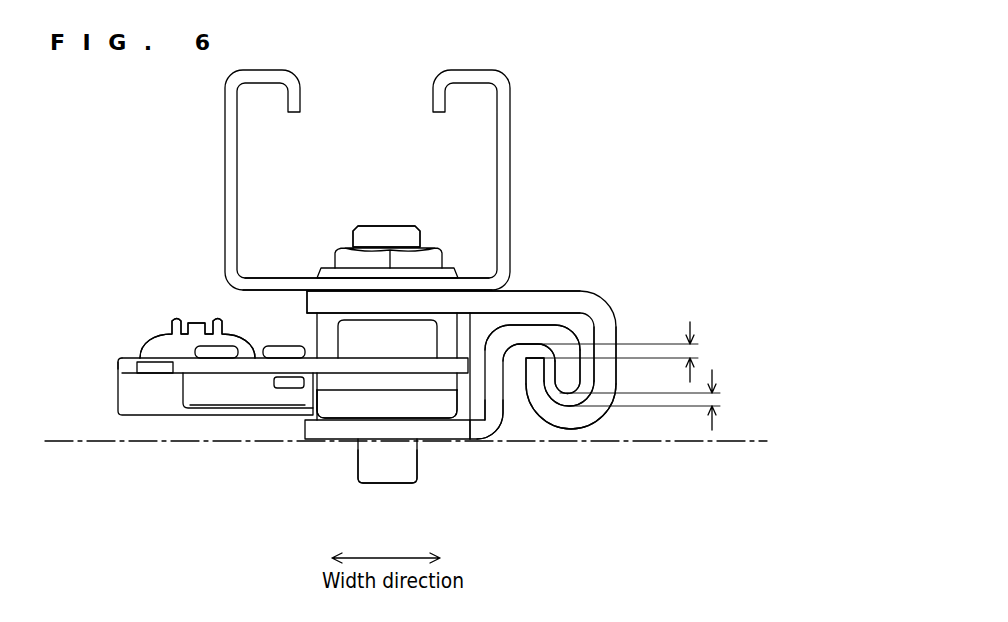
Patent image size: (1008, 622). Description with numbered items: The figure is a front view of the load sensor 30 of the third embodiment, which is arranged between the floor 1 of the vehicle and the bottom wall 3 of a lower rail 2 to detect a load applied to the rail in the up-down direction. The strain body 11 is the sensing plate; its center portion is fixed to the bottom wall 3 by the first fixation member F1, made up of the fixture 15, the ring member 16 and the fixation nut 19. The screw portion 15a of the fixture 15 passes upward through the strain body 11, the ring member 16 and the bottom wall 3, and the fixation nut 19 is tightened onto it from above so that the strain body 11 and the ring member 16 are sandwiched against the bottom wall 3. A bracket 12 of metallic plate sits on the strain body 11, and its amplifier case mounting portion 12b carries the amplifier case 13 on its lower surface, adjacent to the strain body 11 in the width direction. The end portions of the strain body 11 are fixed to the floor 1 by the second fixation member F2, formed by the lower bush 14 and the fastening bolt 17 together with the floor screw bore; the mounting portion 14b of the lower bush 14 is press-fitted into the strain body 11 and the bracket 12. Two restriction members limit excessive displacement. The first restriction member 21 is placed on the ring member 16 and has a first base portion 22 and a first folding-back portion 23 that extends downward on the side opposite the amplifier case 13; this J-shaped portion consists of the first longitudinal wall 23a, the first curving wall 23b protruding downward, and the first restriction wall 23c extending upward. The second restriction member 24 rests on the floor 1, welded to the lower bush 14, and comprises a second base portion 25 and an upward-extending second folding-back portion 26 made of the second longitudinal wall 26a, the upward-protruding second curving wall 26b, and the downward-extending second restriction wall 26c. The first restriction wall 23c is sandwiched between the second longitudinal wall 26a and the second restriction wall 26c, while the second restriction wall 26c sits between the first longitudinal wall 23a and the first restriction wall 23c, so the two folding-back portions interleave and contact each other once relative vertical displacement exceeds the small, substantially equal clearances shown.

The floor 1 is at (745, 440).
The lower rail 2 is at (523, 232).
The bottom wall 3 is at (262, 282).
The strain body 11 is at (320, 382).
The bracket 12 is at (278, 372).
The amplifier case mounting portion 12b is at (225, 368).
The amplifier case 13 is at (141, 406).
The lower bush 14 is at (387, 404).
The mounting portion 14b is at (325, 415).
The fixture 15 is at (386, 236).
The screw portion 15a is at (373, 232).
The ring member 16 is at (316, 333).
The fastening bolt 17 is at (403, 467).
The fixation nut 19 is at (432, 253).
The first restriction member 21 is at (532, 292).
The first base portion 22 is at (347, 287).
The first folding-back portion 23 is at (620, 310).
The first longitudinal wall 23a is at (610, 328).
The first curving wall 23b is at (580, 420).
The first restriction wall 23c is at (524, 365).
The second restriction member 24 is at (353, 432).
The second base portion 25 is at (386, 442).
The second folding-back portion 26 is at (494, 424).
The second longitudinal wall 26a is at (502, 397).
The second curving wall 26b is at (558, 322).
The second restriction wall 26c is at (568, 382).
The load sensor 30 is at (207, 298).
The first fixation member F1 is at (327, 185).
The second fixation member F2 is at (459, 434).